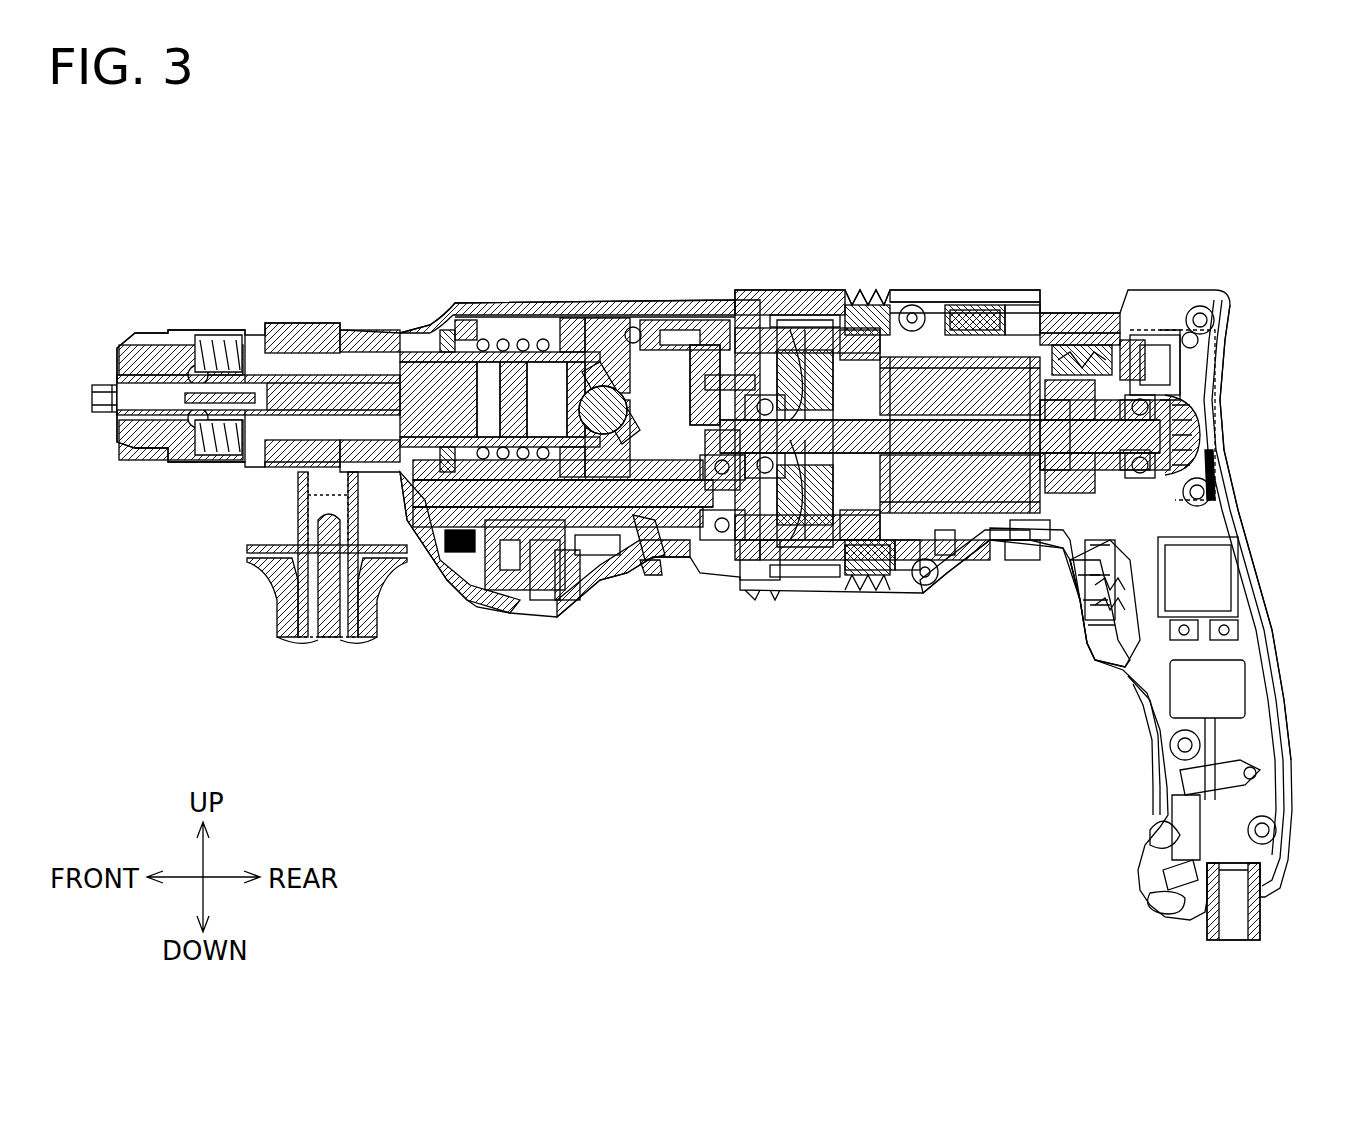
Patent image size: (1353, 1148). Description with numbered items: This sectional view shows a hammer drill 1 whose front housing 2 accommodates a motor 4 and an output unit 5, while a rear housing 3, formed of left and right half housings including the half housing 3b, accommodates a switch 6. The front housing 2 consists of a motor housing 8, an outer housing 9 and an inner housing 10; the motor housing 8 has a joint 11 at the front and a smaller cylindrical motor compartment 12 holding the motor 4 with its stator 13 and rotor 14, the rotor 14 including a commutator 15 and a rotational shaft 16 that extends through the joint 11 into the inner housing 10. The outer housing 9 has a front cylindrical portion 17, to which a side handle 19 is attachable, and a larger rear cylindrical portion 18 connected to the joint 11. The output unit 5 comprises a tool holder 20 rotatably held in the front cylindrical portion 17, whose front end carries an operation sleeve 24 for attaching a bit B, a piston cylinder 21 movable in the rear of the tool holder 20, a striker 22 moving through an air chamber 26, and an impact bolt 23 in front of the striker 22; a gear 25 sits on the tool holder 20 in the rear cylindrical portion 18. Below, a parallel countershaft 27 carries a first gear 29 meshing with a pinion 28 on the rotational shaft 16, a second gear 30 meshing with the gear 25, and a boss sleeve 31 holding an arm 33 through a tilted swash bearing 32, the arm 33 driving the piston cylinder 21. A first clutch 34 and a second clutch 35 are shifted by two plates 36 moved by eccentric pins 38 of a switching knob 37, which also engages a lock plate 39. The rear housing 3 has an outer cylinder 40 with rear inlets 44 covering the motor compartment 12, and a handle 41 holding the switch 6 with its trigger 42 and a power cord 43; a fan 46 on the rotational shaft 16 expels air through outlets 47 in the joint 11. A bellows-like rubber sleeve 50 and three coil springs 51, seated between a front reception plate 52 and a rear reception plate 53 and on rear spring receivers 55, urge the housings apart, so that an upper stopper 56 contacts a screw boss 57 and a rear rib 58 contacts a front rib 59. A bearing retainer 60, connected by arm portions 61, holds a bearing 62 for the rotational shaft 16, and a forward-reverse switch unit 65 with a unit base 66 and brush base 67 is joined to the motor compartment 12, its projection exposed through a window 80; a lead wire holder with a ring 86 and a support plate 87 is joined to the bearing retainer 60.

The hammer drill 1 is at (774, 198).
The front housing 2 is at (619, 283).
The rear housing 3 is at (1042, 262).
The half housing 3b is at (1195, 360).
The motor 4 is at (965, 357).
The output unit 5 is at (512, 350).
The switch 6 is at (1215, 555).
The motor housing 8 is at (801, 274).
The outer housing 9 is at (562, 312).
The inner housing 10 is at (680, 318).
The joint 11 is at (770, 290).
The motor compartment 12 is at (990, 535).
The stator 13 is at (865, 575).
The rotor 14 is at (895, 575).
The commutator 15 is at (1050, 560).
The rotational shaft 16 is at (845, 575).
The front cylindrical portion 17 is at (410, 330).
The rear cylindrical portion 18 is at (600, 318).
The side handle 19 is at (298, 640).
The tool holder 20 is at (362, 330).
The piston cylinder 21 is at (578, 320).
The striker 22 is at (490, 340).
The impact bolt 23 is at (322, 323).
The operation sleeve 24 is at (215, 330).
The gear 25 is at (460, 362).
The air chamber 26 is at (535, 352).
The countershaft 27 is at (700, 592).
The pinion 28 is at (728, 372).
The first gear 29 is at (703, 345).
The second gear 30 is at (458, 602).
The boss sleeve 31 is at (650, 520).
The swash bearing 32 is at (660, 562).
The arm 33 is at (615, 368).
The first clutch 34 is at (590, 618).
The second clutch 35 is at (562, 612).
The plates 36 is at (520, 592).
The switching knob 37 is at (614, 592).
The eccentric pins 38 is at (548, 600).
The lock plate 39 is at (483, 590).
The outer cylinder 40 is at (932, 292).
The handle 41 is at (1245, 508).
The trigger 42 is at (1090, 655).
The power cord 43 is at (1205, 925).
The rear inlets 44 is at (1185, 385).
The fan 46 is at (770, 602).
The outlets 47 is at (797, 567).
The rubber sleeve 50 is at (860, 300).
The coil springs 51 is at (1000, 318).
The front reception plate 52 is at (948, 303).
The rear reception plate 53 is at (1020, 313).
The rear spring receivers 55 is at (908, 572).
The upper stopper 56 is at (905, 305).
The screw boss 57 is at (895, 318).
The rear rib 58 is at (960, 545).
The front rib 59 is at (943, 557).
The bearing retainer 60 is at (1175, 400).
The arm portions 61 is at (1098, 343).
The bearing 62 is at (1188, 425).
The forward-reverse switch unit 65 is at (1082, 330).
The unit base 66 is at (1002, 548).
The brush base 67 is at (1025, 542).
The window 80 is at (1125, 340).
The ring 86 is at (1210, 465).
The support plate 87 is at (1148, 333).
The bit B is at (108, 385).